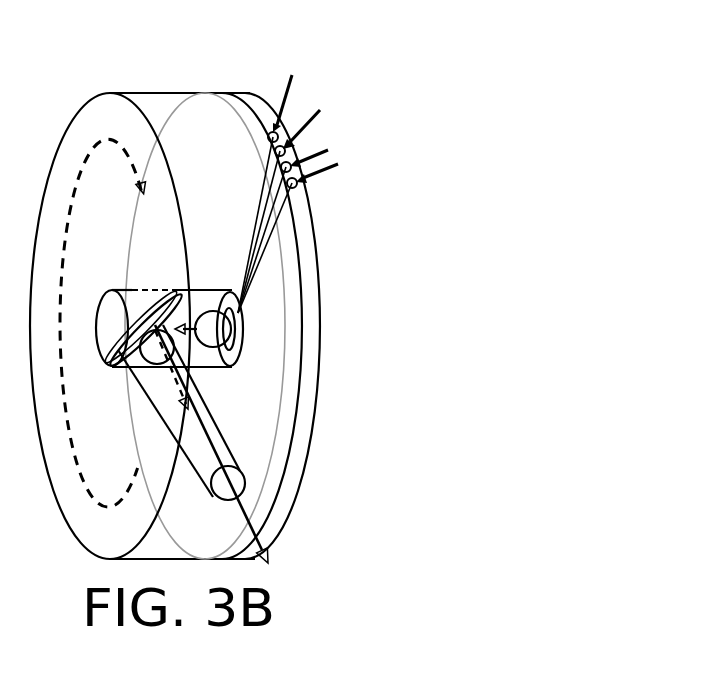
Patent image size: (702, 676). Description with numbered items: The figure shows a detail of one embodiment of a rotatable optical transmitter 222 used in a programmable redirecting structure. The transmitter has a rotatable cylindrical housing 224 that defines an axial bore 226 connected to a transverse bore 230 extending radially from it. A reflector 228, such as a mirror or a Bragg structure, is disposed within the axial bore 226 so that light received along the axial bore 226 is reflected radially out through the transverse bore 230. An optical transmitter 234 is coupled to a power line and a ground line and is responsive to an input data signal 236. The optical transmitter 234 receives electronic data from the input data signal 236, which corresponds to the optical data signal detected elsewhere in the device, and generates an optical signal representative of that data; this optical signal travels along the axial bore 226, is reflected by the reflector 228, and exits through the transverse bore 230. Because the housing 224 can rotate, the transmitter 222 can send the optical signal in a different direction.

The rotatable optical transmitter 222 is at (178, 88).
The rotatable cylindrical housing 224 is at (128, 92).
The axial bore 226 is at (215, 367).
The reflector 228 is at (143, 315).
The transverse bore 230 is at (210, 415).
The optical transmitter 234 is at (229, 330).
The input data signal 236 is at (306, 178).